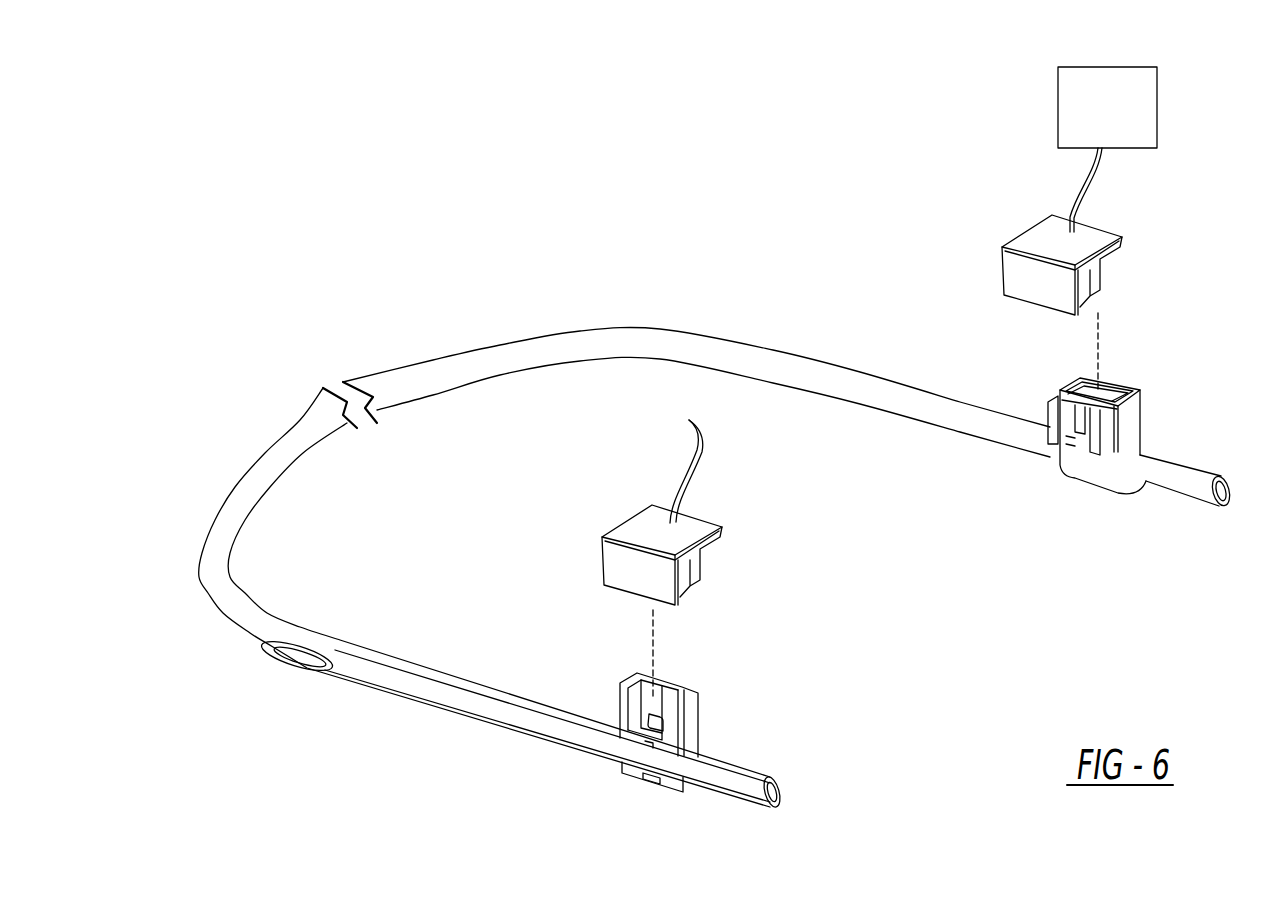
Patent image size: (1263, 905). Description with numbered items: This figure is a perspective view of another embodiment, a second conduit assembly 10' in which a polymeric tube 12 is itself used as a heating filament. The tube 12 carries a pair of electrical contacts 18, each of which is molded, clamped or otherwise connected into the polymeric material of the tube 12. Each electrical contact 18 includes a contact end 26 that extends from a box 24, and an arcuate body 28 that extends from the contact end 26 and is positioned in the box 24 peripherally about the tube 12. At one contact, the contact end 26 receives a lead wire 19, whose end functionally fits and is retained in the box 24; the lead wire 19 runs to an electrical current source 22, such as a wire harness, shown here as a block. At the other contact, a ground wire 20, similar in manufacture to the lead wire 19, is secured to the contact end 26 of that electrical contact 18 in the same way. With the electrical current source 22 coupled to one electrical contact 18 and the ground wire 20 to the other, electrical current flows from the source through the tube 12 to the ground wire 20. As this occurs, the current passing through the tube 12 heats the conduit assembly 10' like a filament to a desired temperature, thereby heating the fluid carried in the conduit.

The second conduit assembly 10' is at (885, 270).
The tube 12 is at (612, 328).
The electrical contact 18 is at (1093, 393).
The lead wire 19 is at (1092, 185).
The ground wire 20 is at (702, 457).
The electrical current source 22 is at (1157, 115).
The box 24 is at (1123, 383).
The contact end 26 is at (653, 720).
The arcuate body 28 is at (658, 778).